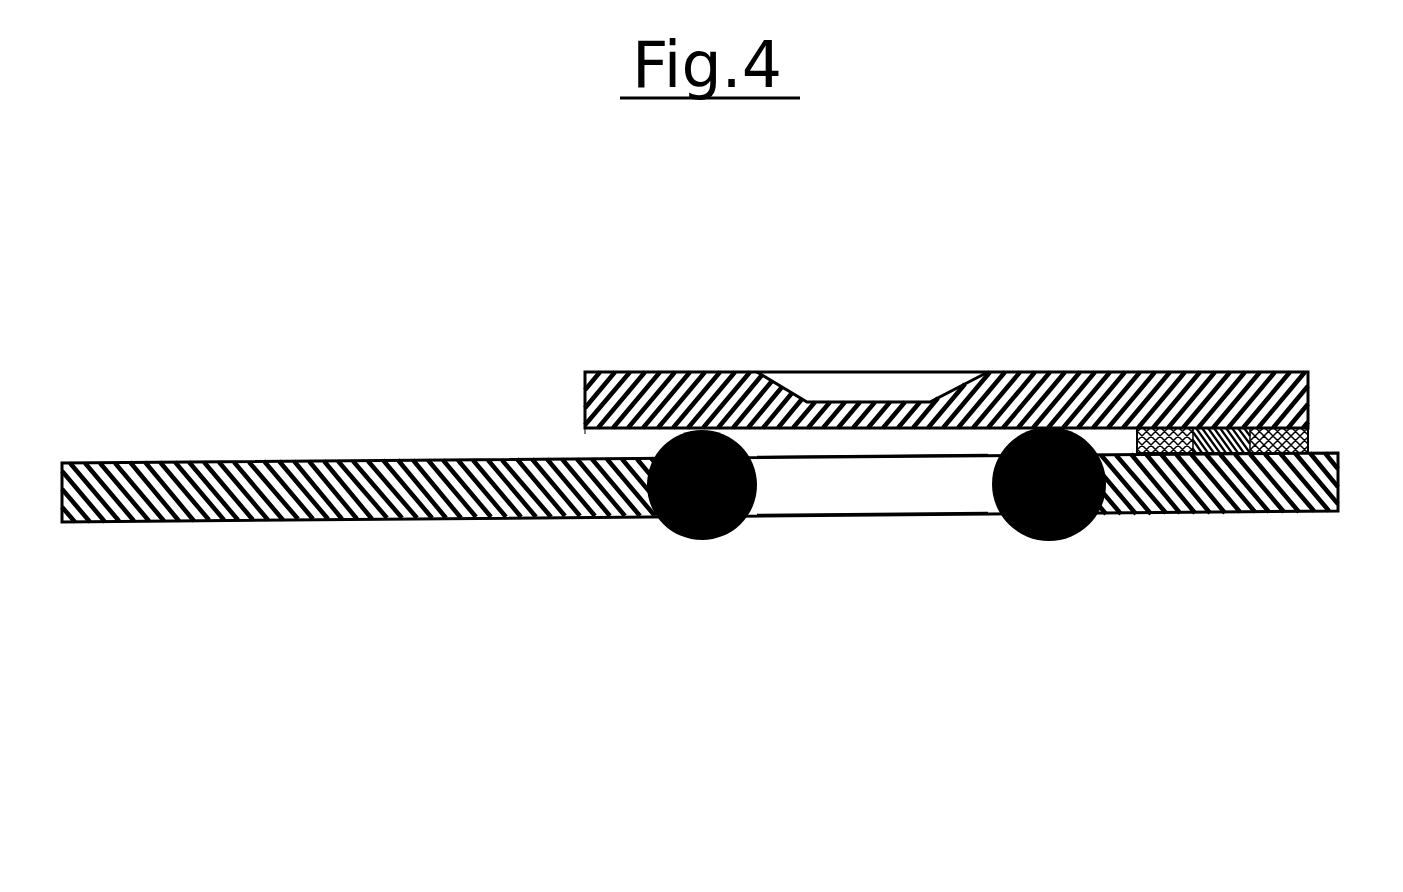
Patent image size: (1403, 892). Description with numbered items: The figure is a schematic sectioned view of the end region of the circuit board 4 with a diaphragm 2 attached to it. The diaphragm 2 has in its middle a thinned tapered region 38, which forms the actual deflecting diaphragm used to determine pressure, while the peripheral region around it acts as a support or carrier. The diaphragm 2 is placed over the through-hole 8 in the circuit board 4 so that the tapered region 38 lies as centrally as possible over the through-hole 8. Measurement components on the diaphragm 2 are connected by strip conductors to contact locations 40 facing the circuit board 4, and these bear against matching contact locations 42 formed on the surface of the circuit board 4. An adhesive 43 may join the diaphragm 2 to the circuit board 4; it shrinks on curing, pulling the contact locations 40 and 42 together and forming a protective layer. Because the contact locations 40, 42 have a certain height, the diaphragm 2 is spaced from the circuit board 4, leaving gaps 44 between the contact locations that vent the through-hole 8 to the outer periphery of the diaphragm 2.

The diaphragm 2 is at (990, 372).
The circuit board 4 is at (524, 521).
The through-hole 8 is at (872, 514).
The tapered region 38 is at (878, 402).
The contact locations 40 is at (1217, 453).
The contact locations 42 is at (1217, 427).
The adhesive 43 is at (1313, 447).
The gaps 44 is at (594, 446).